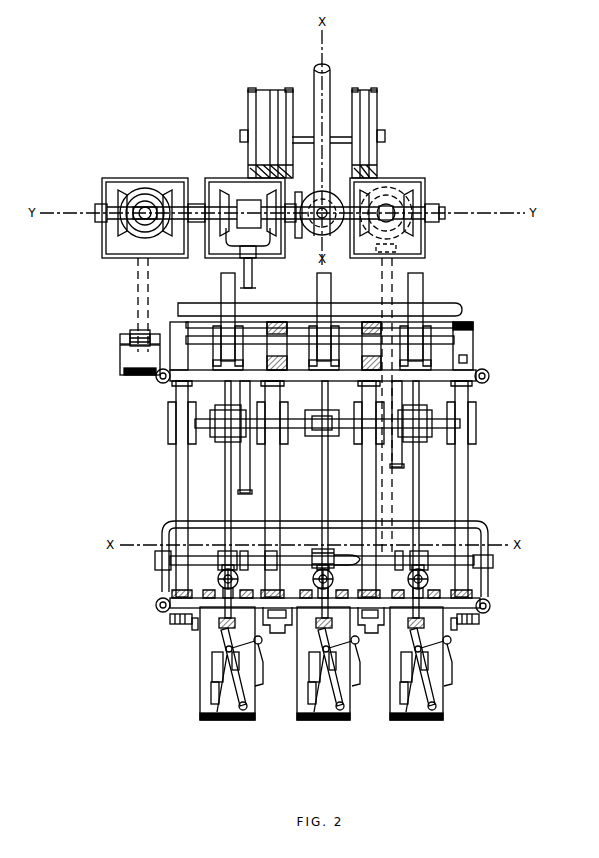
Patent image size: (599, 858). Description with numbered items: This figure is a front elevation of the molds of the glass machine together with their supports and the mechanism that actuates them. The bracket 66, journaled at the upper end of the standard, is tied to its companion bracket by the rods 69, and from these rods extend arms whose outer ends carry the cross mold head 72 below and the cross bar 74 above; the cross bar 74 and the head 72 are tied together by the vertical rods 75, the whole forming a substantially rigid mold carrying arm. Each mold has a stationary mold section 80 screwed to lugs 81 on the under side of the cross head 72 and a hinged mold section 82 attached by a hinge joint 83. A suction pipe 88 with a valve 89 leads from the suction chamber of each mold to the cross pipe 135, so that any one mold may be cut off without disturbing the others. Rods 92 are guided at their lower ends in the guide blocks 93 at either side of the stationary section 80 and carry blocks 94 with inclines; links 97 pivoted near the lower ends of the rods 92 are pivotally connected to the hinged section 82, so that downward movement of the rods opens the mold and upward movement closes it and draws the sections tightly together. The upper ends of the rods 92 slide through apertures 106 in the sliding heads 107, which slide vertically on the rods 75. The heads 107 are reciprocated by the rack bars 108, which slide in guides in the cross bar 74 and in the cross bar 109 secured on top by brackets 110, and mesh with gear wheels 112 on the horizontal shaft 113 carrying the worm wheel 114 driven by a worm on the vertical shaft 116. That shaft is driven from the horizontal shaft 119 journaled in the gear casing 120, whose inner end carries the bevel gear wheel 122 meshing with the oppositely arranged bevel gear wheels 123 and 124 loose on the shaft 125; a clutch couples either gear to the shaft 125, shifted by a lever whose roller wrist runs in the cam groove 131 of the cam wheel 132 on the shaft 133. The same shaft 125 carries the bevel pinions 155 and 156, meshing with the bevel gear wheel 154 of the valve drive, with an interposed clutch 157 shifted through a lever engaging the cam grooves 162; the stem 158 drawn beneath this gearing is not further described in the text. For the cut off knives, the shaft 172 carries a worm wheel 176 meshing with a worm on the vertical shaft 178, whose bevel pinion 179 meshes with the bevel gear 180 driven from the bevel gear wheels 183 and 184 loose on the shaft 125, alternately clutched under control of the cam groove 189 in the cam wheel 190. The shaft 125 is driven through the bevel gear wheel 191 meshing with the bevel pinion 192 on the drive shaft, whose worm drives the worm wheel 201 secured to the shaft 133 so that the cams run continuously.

The bracket 66 is at (448, 309).
The rods 69 is at (240, 459).
The cross mold head 72 is at (192, 604).
The cross bar 74 is at (450, 377).
The vertical rods 75 is at (176, 486).
The stationary mold section 80 is at (401, 672).
The lugs 81 is at (193, 630).
The hinged mold section 82 is at (432, 672).
The hinge joint 83 is at (263, 641).
The suction pipe 88 is at (323, 550).
The valve 89 is at (430, 579).
The rods 92 is at (225, 509).
The guide blocks 93 is at (226, 628).
The blocks 94 is at (228, 678).
The links 97 is at (434, 694).
The apertures 106 is at (318, 431).
The sliding heads 107 is at (205, 422).
The rack bars 108 is at (222, 295).
The cross bar 109 is at (442, 325).
The brackets 110 is at (284, 357).
The gear wheels 112 is at (218, 338).
The horizontal shaft 113 is at (480, 343).
The worm wheel 114 is at (132, 332).
The vertical shaft 116 is at (140, 270).
The horizontal shaft 119 is at (118, 210).
The gear casing 120 is at (103, 241).
The bevel gear wheel 122 is at (144, 193).
The bevel gear wheel 123 is at (131, 200).
The bevel gear wheel 124 is at (166, 197).
The shaft 125 is at (442, 212).
The cam groove 131 is at (281, 100).
The cam wheel 132 is at (248, 110).
The shaft 133 is at (240, 136).
The cross pipe 135 is at (352, 556).
The bevel gear wheel 154 is at (262, 245).
The bevel pinion 155 is at (222, 201).
The bevel pinion 156 is at (269, 199).
The clutch 157 is at (250, 210).
The stem 158 is at (244, 266).
The cam grooves 162 is at (259, 104).
The shaft 172 is at (450, 565).
The worm wheel 176 is at (398, 553).
The vertical shaft 178 is at (395, 264).
The bevel pinion 179 is at (405, 242).
The bevel gear 180 is at (395, 198).
The bevel gear wheel 183 is at (412, 197).
The bevel gear wheel 184 is at (368, 196).
The cam groove 189 is at (364, 113).
The cam wheel 190 is at (386, 117).
The bevel gear wheel 191 is at (299, 240).
The bevel pinion 192 is at (335, 226).
The worm wheel 201 is at (328, 76).